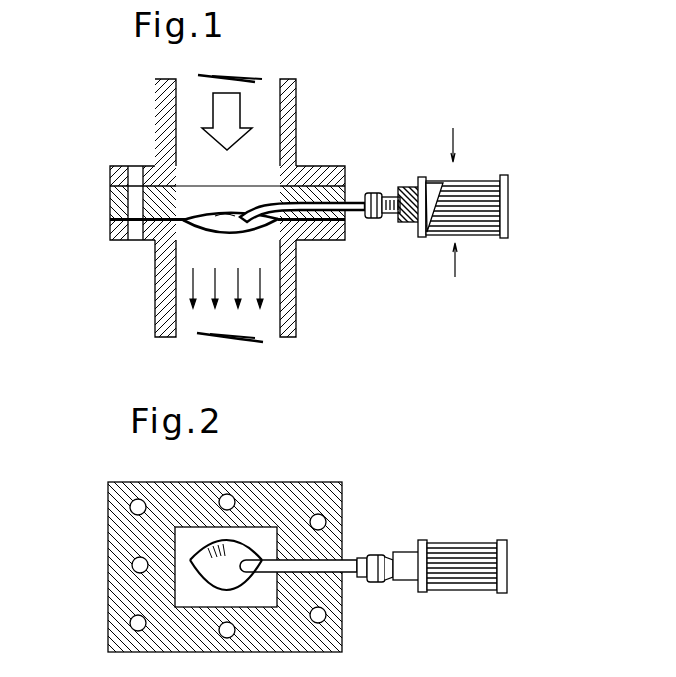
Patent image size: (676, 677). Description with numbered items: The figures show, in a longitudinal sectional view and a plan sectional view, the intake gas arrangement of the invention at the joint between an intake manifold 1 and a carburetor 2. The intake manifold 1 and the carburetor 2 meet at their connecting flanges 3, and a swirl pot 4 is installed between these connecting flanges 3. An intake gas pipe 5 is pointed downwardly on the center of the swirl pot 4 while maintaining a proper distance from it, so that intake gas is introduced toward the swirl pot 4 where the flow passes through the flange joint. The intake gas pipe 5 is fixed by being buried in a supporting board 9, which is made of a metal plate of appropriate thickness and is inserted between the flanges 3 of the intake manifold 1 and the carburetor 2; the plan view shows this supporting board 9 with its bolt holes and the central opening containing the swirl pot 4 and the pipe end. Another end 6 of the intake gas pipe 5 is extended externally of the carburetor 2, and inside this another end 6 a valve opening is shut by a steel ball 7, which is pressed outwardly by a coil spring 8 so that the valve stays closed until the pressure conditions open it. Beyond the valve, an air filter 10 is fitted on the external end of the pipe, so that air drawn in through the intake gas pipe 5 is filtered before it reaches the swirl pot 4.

In FIG. 1, the intake manifold 1 is at (158, 325).
In FIG. 1, the carburetor 2 is at (297, 112).
In FIG. 1, the connecting flanges 3 is at (344, 164).
In FIG. 1, the swirl pot 4 is at (240, 229).
In FIG. 2, the swirl pot 4 is at (190, 557).
In FIG. 1, the intake gas pipe 5 is at (258, 218).
In FIG. 2, the intake gas pipe 5 is at (243, 560).
In FIG. 1, the another end of the intake gas pipe 6 is at (370, 220).
In FIG. 2, the another end of the intake gas pipe 6 is at (367, 555).
In FIG. 1, the steel ball 7 is at (410, 188).
In FIG. 1, the coil spring 8 is at (392, 217).
In FIG. 1, the supporting board 9 is at (109, 205).
In FIG. 2, the supporting board 9 is at (112, 593).
In FIG. 1, the air filter 10 is at (483, 180).